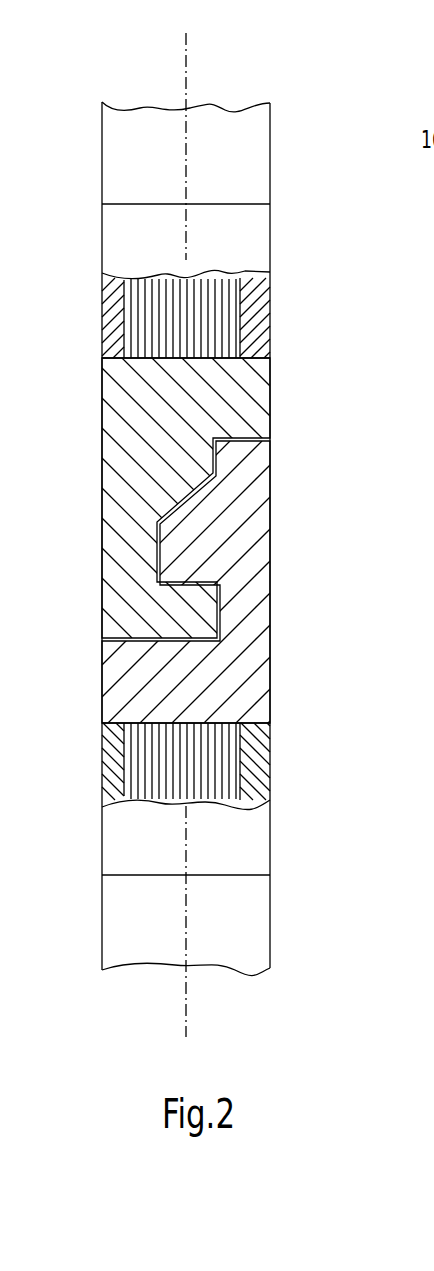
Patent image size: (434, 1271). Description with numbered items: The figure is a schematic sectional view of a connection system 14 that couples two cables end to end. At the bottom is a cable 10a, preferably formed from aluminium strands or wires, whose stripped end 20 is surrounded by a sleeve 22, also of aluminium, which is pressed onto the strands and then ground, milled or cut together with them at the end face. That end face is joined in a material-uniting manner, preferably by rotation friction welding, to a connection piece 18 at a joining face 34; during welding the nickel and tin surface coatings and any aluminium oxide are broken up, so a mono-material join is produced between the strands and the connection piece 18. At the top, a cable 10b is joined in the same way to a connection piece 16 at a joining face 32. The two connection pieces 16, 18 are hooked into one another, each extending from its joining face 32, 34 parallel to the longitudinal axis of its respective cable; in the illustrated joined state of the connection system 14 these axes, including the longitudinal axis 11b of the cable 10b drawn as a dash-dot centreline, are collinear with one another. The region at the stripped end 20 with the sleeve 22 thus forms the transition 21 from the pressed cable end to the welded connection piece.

The cable 10a is at (257, 930).
The cable 10b is at (253, 147).
The longitudinal axis 11b is at (186, 52).
The connection system 14 is at (312, 627).
The connection piece 16 is at (122, 475).
The connection piece 18 is at (250, 536).
The stripped end 20 is at (95, 722).
The transition 21 is at (217, 788).
The sleeve 22 is at (260, 773).
The joining face 32 is at (245, 356).
The joining face 34 is at (241, 723).